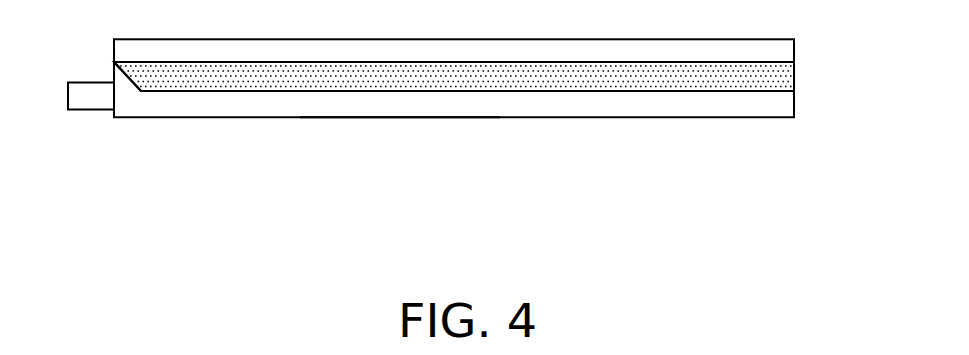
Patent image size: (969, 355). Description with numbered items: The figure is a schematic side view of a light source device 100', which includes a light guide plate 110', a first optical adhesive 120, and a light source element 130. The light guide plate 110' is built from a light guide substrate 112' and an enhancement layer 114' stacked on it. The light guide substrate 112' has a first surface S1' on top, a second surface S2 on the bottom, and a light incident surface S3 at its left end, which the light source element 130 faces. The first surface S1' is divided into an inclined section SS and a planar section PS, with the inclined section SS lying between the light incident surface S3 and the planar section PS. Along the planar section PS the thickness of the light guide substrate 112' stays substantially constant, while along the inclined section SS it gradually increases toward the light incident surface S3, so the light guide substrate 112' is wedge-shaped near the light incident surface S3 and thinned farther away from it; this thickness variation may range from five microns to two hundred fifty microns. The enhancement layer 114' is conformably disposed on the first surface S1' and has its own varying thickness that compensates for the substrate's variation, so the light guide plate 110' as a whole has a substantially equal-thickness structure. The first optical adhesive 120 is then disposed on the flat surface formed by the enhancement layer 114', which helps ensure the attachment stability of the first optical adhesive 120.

The light source device 100' is at (828, 178).
The light guide plate 110' is at (850, 90).
The light guide substrate 112' is at (483, 94).
The enhancement layer 114' is at (483, 71).
The first optical adhesive 120 is at (787, 47).
The light source element 130 is at (92, 88).
The first surface S1' is at (176, 222).
The second surface S2 is at (390, 108).
The light incident surface S3 is at (105, 97).
The inclined section SS is at (132, 93).
The planar section PS is at (196, 101).